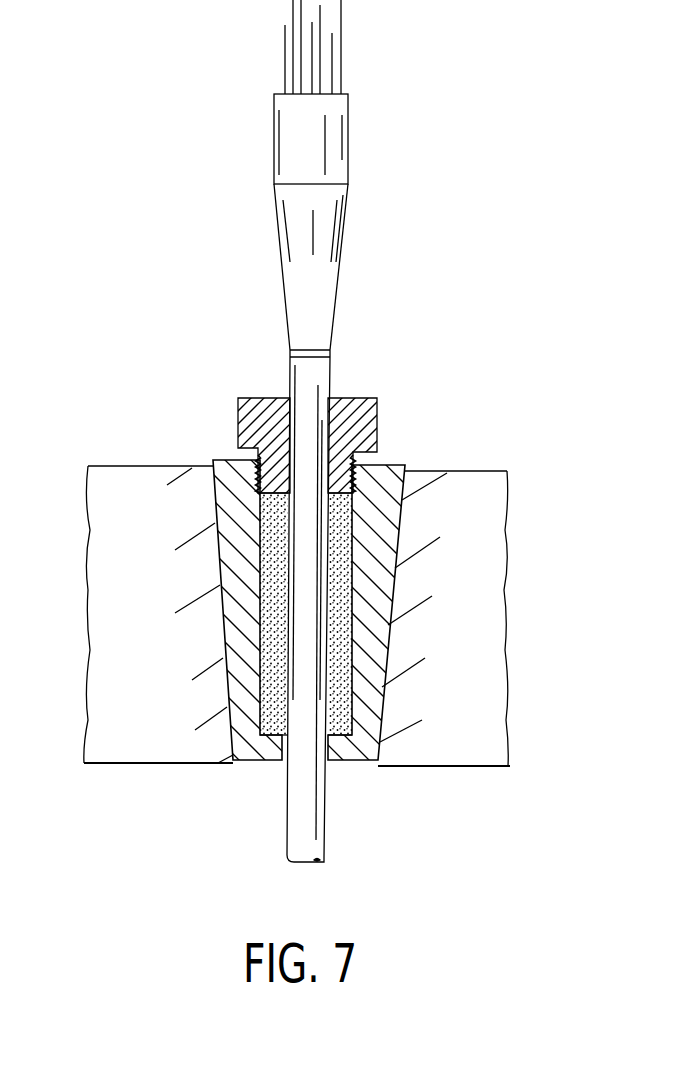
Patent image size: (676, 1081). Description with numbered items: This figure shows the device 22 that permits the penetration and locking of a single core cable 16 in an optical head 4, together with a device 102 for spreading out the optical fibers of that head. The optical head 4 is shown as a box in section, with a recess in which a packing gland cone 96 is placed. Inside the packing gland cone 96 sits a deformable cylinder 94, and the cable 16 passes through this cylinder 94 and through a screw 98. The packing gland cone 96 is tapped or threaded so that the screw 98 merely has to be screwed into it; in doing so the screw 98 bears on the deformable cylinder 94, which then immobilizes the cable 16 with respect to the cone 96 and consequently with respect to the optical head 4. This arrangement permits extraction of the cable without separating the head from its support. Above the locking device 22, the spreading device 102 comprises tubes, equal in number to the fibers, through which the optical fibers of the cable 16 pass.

The device for the spreading out of the optical fibers 102 is at (333, 165).
The single core cable 16 is at (300, 373).
The screw 98 is at (355, 423).
The packing gland cone 96 is at (235, 487).
The deformable cylinder 94 is at (337, 720).
The optical head 4 is at (118, 653).
The device permitting the penetration and locking of the single core cable 22 is at (230, 799).